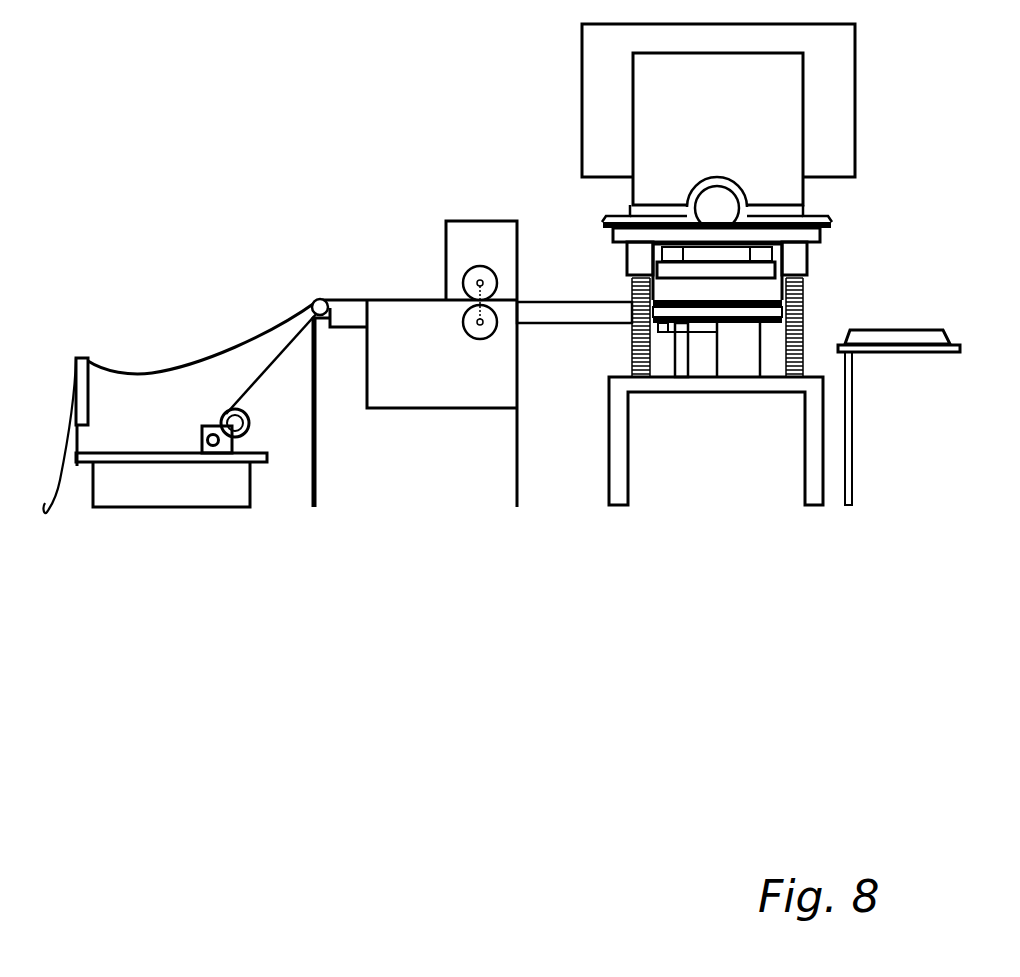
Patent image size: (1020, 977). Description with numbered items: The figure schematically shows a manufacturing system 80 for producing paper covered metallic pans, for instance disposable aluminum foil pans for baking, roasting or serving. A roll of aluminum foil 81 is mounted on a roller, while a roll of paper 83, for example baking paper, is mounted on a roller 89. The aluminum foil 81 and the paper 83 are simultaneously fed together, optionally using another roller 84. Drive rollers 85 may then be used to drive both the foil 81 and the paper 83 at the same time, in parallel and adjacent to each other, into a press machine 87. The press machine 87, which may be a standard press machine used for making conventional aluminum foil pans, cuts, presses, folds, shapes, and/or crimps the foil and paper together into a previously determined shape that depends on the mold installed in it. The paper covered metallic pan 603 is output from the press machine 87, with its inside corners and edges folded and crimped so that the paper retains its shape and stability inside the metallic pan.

The manufacturing system 80 is at (300, 674).
The roll of aluminum foil 81 is at (128, 370).
The roll of paper 83 is at (242, 388).
The roller 84 is at (315, 298).
The drive rollers 85 is at (467, 333).
The press machine 87 is at (686, 264).
The roller 89 is at (247, 435).
The paper covered metallic pan 603 is at (913, 327).